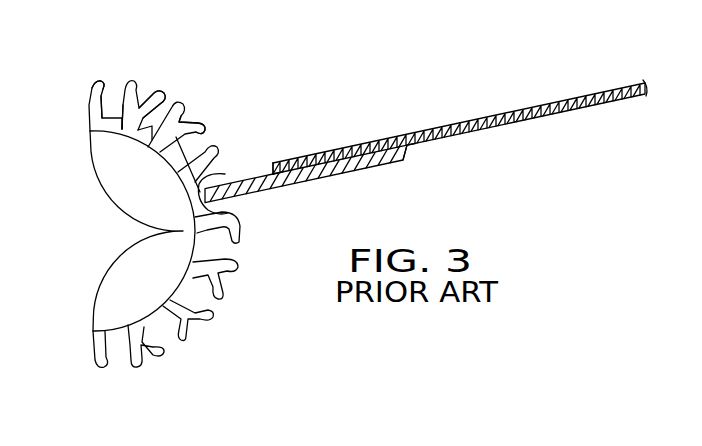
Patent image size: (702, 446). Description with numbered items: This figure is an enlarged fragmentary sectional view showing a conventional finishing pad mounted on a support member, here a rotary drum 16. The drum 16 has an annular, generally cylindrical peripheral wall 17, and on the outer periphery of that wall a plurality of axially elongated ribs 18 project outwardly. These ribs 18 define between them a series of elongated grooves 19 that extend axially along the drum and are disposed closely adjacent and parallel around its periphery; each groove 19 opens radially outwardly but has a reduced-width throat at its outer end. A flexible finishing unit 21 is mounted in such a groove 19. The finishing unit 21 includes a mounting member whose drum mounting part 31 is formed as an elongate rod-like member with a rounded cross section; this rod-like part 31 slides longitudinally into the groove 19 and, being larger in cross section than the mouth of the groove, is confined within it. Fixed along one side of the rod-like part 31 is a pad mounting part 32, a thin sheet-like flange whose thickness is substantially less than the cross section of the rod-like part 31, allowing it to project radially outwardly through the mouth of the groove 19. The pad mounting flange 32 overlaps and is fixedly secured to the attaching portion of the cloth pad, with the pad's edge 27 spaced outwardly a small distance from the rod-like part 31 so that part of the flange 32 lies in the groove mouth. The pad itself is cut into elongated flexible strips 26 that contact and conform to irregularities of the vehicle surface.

The cylindrical drum 16 is at (99, 133).
The peripheral wall 17 is at (182, 170).
The ribs 18 is at (93, 88).
The grooves 19 is at (110, 95).
The flexible finishing unit 21 is at (463, 100).
The flexible strips 26 is at (391, 145).
The edge of the pad 27 is at (272, 165).
The drum mounting part 31 is at (193, 208).
The pad mounting part 32 is at (300, 183).